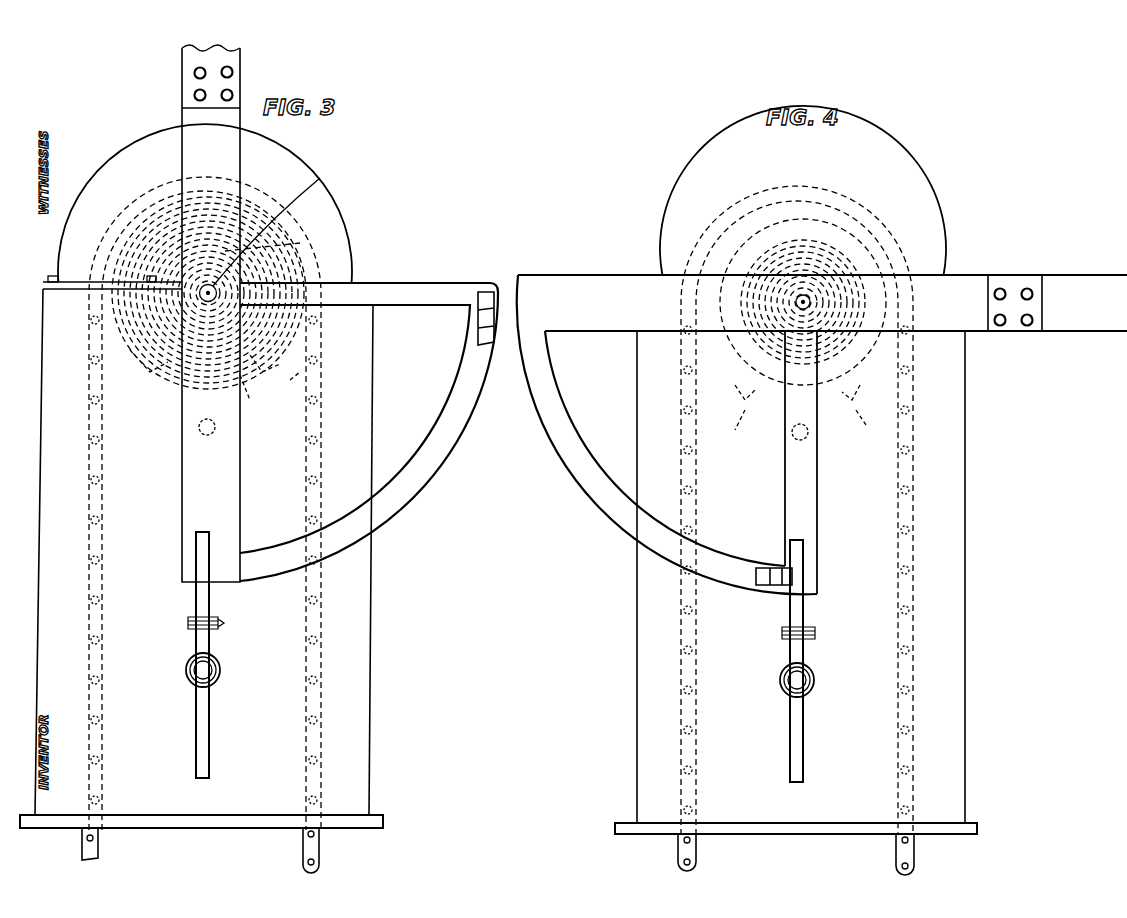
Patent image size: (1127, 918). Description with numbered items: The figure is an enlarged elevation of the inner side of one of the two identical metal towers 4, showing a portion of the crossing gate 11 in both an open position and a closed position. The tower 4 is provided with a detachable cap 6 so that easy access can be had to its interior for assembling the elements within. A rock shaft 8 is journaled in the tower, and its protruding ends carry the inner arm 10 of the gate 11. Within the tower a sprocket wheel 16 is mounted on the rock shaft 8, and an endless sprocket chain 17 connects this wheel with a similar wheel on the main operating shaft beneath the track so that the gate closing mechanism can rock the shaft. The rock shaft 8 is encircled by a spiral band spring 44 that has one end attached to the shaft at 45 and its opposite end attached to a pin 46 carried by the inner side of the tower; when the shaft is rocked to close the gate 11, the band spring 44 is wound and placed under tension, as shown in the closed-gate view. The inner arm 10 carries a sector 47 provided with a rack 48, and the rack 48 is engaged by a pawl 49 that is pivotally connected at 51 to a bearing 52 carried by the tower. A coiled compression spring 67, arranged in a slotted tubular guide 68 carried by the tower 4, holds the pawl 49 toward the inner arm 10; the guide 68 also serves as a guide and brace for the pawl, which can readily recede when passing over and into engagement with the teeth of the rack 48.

In FIG. 3, the tower 4 is at (43, 487).
In FIG. 4, the tower 4 is at (965, 541).
In FIG. 3, the detachable cap 6 is at (205, 256).
In FIG. 4, the detachable cap 6 is at (803, 245).
In FIG. 3, the rock shaft 8 is at (273, 224).
In FIG. 3, the inner arm 10 is at (211, 313).
In FIG. 4, the inner arm 10 is at (822, 434).
In FIG. 3, the gate 11 is at (185, 55).
In FIG. 4, the gate 11 is at (1045, 303).
In FIG. 3, the sprocket wheel 16 is at (305, 376).
In FIG. 4, the sprocket wheel 16 is at (791, 419).
In FIG. 3, the endless sprocket chain 17 is at (306, 655).
In FIG. 4, the endless sprocket chain 17 is at (696, 675).
In FIG. 3, the spiral band spring 44 is at (300, 243).
In FIG. 3, the attachment point of band spring to shaft 45 is at (262, 405).
In FIG. 3, the pin 46 is at (200, 435).
In FIG. 3, the sector 47 is at (460, 414).
In FIG. 4, the sector 47 is at (667, 434).
In FIG. 3, the rack 48 is at (486, 290).
In FIG. 4, the rack 48 is at (770, 574).
In FIG. 3, the pawl 49 is at (203, 555).
In FIG. 4, the pawl 49 is at (803, 553).
In FIG. 3, the pivotal connection 51 is at (224, 623).
In FIG. 4, the pivotal connection 51 is at (815, 631).
In FIG. 3, the bearing 52 is at (190, 626).
In FIG. 4, the bearing 52 is at (782, 633).
In FIG. 3, the coiled compression spring 67 is at (196, 677).
In FIG. 4, the coiled compression spring 67 is at (808, 688).
In FIG. 3, the slotted tubular guide 68 is at (187, 666).
In FIG. 4, the slotted tubular guide 68 is at (812, 672).